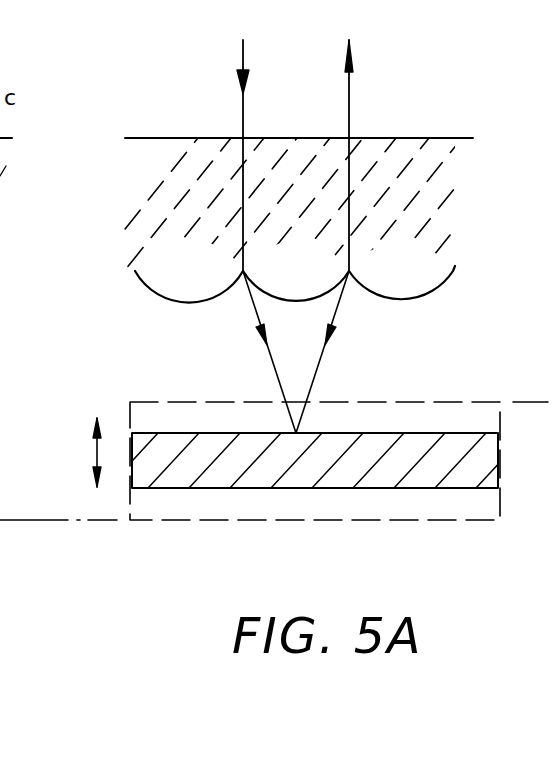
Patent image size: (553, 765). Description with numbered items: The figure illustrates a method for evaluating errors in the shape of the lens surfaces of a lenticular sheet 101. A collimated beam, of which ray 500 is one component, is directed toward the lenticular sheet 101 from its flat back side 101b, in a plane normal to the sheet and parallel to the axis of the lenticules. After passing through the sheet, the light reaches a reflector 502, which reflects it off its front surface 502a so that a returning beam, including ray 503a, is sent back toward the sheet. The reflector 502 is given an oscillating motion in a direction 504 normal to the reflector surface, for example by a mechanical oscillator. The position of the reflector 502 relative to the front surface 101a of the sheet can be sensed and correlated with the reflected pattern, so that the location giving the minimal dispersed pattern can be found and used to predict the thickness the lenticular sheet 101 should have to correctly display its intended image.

The lenticular sheet 101 is at (175, 195).
The front surface 101a is at (437, 291).
The flat back side 101b is at (393, 138).
The ray 500 is at (243, 102).
The ray 503a is at (349, 100).
The reflector 502 is at (200, 488).
The front surface 502a is at (383, 433).
The direction 504 is at (92, 452).